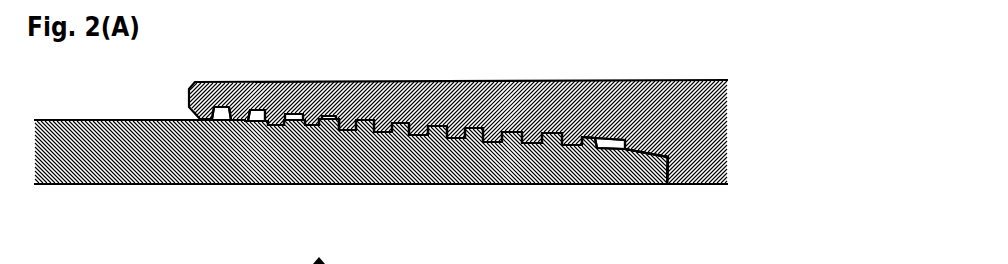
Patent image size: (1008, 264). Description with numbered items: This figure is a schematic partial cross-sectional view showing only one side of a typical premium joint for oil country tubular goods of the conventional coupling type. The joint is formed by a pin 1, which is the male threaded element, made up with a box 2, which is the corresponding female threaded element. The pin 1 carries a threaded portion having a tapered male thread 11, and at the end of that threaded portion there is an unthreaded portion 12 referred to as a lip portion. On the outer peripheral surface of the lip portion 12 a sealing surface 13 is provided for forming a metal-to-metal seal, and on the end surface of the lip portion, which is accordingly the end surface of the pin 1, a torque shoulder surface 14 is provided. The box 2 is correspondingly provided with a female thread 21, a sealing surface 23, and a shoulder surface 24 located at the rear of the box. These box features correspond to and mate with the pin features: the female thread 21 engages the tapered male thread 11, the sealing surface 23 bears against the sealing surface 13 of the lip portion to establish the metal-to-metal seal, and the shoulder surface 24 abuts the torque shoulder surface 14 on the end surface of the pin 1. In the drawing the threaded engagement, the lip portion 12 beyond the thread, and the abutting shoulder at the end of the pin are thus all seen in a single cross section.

The pin 1 is at (290, 148).
The box 2 is at (590, 110).
The tapered male thread 11 is at (475, 137).
The unthreaded portion (lip portion) 12 is at (646, 161).
The sealing surface 13 is at (656, 158).
The torque shoulder surface 14 is at (667, 163).
The female thread 21 is at (494, 130).
The sealing surface 23 is at (664, 158).
The shoulder surface 24 is at (672, 168).